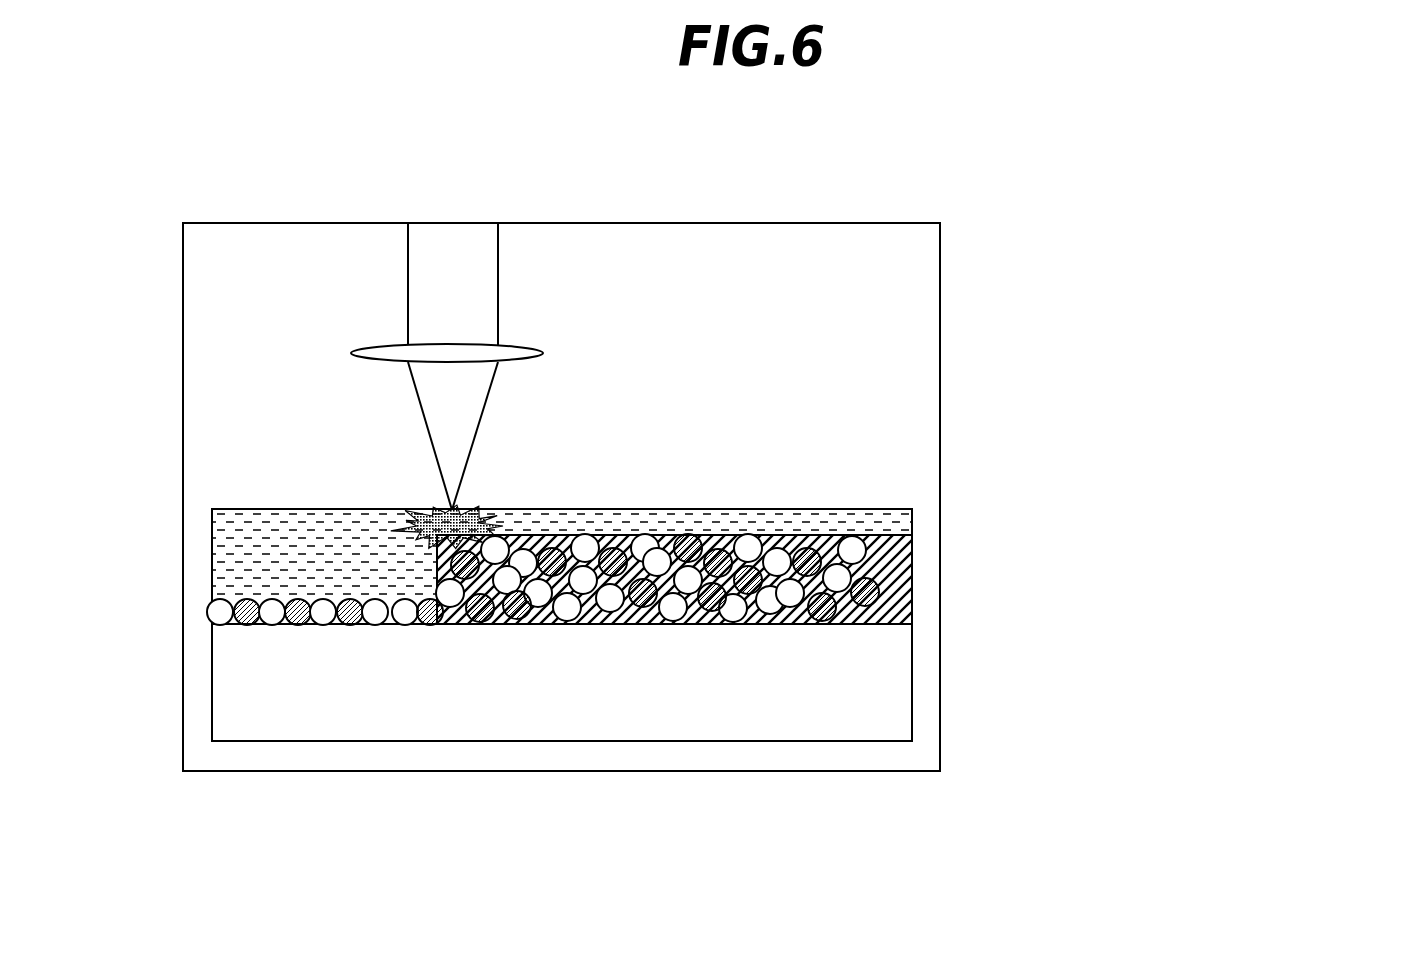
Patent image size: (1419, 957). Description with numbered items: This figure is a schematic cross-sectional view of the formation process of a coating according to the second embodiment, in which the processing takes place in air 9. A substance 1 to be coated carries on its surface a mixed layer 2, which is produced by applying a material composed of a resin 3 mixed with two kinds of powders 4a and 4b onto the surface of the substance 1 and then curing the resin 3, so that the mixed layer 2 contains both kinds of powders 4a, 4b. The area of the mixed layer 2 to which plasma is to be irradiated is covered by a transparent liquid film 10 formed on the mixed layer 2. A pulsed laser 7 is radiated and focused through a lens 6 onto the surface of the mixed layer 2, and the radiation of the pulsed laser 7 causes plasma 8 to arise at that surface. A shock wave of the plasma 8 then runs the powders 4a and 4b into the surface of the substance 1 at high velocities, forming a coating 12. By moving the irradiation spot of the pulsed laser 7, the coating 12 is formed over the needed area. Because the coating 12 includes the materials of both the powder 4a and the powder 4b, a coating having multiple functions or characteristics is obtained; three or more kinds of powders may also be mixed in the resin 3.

The substance 1 is at (905, 692).
The mixed layer 2 is at (687, 553).
The resin 3 is at (907, 570).
The powder 4a is at (855, 548).
The powder 4b is at (880, 593).
The lens 6 is at (543, 352).
The pulsed laser 7 is at (478, 437).
The plasma 8 is at (478, 515).
The air 9 is at (930, 232).
The transparent liquid film 10 is at (855, 512).
The coating 12 is at (205, 610).